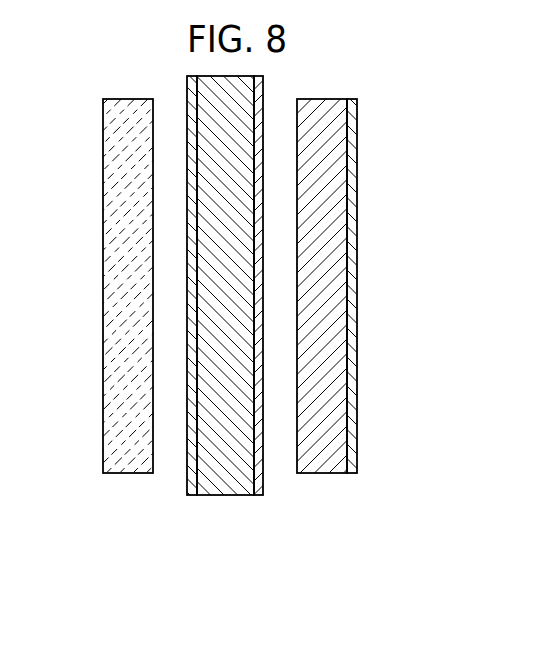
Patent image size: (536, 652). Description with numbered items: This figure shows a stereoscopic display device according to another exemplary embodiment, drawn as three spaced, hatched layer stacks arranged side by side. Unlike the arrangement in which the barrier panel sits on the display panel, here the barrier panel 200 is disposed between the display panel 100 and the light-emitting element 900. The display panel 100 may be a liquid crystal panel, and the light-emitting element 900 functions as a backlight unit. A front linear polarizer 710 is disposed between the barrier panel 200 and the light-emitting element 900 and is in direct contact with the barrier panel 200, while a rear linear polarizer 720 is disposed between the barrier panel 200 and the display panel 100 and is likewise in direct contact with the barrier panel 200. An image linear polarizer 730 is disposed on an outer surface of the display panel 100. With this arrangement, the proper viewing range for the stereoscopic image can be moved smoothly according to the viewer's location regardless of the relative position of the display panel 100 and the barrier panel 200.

The light-emitting element 900 is at (131, 460).
The front linear polarizer 710 is at (193, 488).
The barrier panel 200 is at (228, 482).
The rear linear polarizer 720 is at (257, 495).
The display panel 100 is at (322, 460).
The image linear polarizer 730 is at (352, 473).